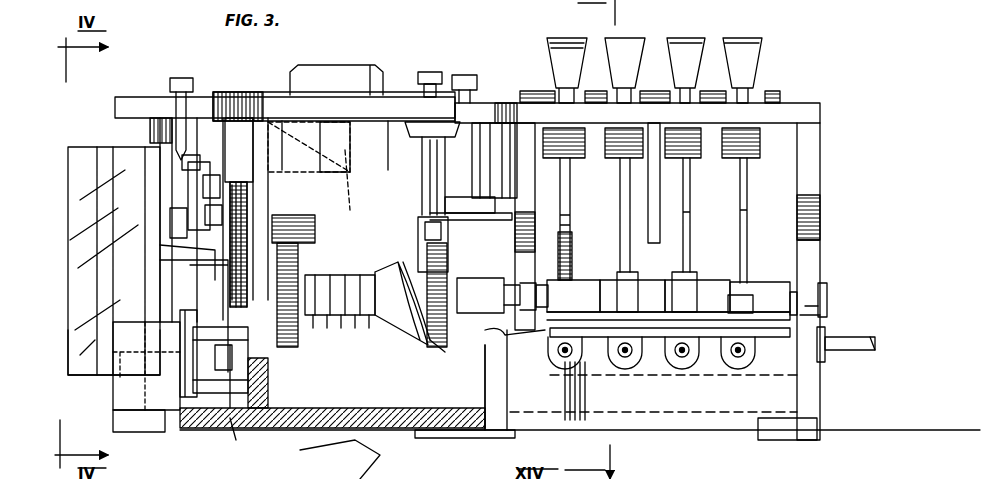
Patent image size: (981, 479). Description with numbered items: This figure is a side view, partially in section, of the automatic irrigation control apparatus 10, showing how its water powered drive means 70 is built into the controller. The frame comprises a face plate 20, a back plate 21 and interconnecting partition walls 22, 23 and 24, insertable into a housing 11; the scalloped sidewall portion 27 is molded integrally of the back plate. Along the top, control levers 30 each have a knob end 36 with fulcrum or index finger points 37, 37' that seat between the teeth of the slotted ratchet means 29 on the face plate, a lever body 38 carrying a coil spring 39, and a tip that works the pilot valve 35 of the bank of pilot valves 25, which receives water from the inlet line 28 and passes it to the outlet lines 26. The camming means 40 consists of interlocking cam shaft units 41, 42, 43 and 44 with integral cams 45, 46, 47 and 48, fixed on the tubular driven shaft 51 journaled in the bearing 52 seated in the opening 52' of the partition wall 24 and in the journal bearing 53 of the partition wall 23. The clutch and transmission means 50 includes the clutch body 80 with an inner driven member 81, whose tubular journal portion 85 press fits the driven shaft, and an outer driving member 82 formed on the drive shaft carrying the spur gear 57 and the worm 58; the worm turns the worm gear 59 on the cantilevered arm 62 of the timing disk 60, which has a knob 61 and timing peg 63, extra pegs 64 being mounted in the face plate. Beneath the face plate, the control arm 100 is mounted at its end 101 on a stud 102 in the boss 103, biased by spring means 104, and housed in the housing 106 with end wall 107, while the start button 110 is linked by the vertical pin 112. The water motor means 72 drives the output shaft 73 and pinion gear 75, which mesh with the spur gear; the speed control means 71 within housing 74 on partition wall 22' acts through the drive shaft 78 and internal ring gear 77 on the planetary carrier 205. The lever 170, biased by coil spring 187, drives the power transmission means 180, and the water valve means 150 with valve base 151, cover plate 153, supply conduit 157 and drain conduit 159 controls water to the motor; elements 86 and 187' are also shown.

The control apparatus 10 is at (825, 50).
The housing 11 is at (825, 110).
The face plate 20 is at (500, 115).
The back plate 21 is at (380, 432).
The partition wall 22 is at (332, 377).
The partition wall 22' is at (285, 107).
The partition wall 23 is at (512, 229).
The outer partition wall 24 is at (815, 188).
The bank of pilot valves 25 is at (683, 378).
The outlet line 26 is at (578, 352).
The frame sidewall portion 27 is at (812, 398).
The water inlet line 28 is at (838, 342).
The slotted ratchet means 29 is at (770, 95).
The control levers 30 is at (755, 175).
The pilot valve 35 is at (722, 360).
The knob end 36 is at (752, 50).
The fulcrum 37 is at (549, 70).
The index finger point 37' is at (613, 70).
The lever body 38 is at (740, 215).
The coil spring 39 is at (730, 165).
The camming means 40 is at (782, 272).
The cam shaft unit 41 is at (575, 290).
The cam shaft unit 42 is at (655, 290).
The cam shaft unit 43 is at (706, 295).
The cam shaft unit 44 is at (758, 285).
The cam 45 is at (610, 268).
The cam 46 is at (685, 285).
The cam 47 is at (750, 305).
The cam 48 is at (548, 318).
The clutch and transmission means 50 is at (395, 330).
The driven shaft 51 is at (510, 310).
The bearing 52 is at (846, 295).
The opening 52' is at (835, 304).
The journal bearing 53 is at (508, 282).
The spur gear 57 is at (280, 348).
The worm 58 is at (322, 322).
The worm gear 59 is at (372, 275).
The timing disk 60 is at (237, 95).
The knob 61 is at (328, 70).
The cantilevered arm 62 is at (352, 210).
The timing peg 63 is at (428, 72).
The extra pegs 64 is at (183, 78).
The water powered drive means 70 is at (135, 438).
The speed control means 71 is at (78, 142).
The water motor means 72 is at (160, 148).
The motor output shaft 73 is at (265, 228).
The housing 74 is at (82, 360).
The pinion gear 75 is at (300, 217).
The internal ring gear 77 is at (195, 172).
The drive shaft 78 is at (180, 213).
The clutch body 80 is at (442, 352).
The inner driven member 81 is at (455, 333).
The outer driving member 82 is at (408, 330).
The journal portion 85 is at (488, 295).
The hub 86 is at (440, 350).
The control arm 100 is at (500, 205).
The arm end 101 is at (420, 210).
The stud 102 is at (420, 185).
The boss 103 is at (345, 178).
The spring means 104 is at (512, 213).
The housing 106 is at (285, 125).
The end wall 107 is at (380, 132).
The start button 110 is at (466, 80).
The vertical pin 112 is at (468, 190).
The water valve means 150 is at (215, 400).
The valve base 151 is at (300, 386).
The cover plate 153 is at (188, 352).
The conduit 157 is at (232, 428).
The drain conduit 159 is at (228, 320).
The lever 170 is at (228, 270).
The power transmission means 180 is at (240, 172).
The coil spring 187 is at (149, 199).
The lever 187' is at (161, 144).
The carrier 205 is at (215, 248).